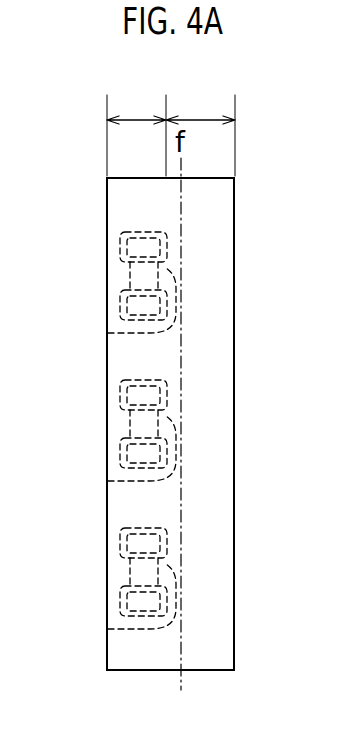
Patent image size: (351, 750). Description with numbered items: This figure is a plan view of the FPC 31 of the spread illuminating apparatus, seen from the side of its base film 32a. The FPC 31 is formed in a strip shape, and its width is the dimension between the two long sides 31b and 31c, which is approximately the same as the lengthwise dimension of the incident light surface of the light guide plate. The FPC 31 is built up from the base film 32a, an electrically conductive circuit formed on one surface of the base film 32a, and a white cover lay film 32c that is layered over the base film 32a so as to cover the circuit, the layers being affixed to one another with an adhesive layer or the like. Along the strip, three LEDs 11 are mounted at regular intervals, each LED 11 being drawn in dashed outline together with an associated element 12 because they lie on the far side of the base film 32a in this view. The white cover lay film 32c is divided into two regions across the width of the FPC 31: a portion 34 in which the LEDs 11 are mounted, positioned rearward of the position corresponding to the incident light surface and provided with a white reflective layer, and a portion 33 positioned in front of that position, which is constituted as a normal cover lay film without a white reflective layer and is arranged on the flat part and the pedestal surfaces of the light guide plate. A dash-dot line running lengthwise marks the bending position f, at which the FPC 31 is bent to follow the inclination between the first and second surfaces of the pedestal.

The LED 11 is at (123, 274).
The lens 12 is at (108, 333).
The FPC 31 is at (222, 681).
The long side 31b is at (235, 228).
The long side 31c is at (107, 222).
The base film 32a is at (137, 658).
The white cover lay film 32c is at (123, 202).
The portion without white reflective layer 33 is at (200, 130).
The portion with white reflective layer 34 is at (136, 130).